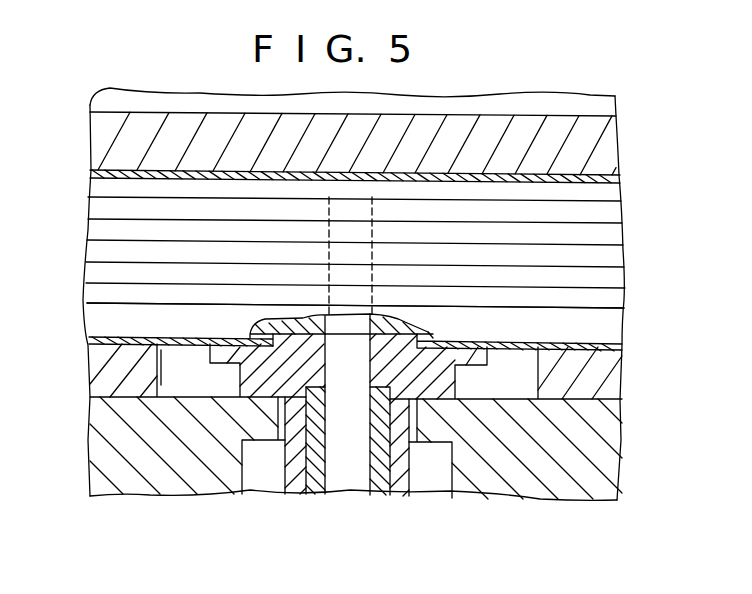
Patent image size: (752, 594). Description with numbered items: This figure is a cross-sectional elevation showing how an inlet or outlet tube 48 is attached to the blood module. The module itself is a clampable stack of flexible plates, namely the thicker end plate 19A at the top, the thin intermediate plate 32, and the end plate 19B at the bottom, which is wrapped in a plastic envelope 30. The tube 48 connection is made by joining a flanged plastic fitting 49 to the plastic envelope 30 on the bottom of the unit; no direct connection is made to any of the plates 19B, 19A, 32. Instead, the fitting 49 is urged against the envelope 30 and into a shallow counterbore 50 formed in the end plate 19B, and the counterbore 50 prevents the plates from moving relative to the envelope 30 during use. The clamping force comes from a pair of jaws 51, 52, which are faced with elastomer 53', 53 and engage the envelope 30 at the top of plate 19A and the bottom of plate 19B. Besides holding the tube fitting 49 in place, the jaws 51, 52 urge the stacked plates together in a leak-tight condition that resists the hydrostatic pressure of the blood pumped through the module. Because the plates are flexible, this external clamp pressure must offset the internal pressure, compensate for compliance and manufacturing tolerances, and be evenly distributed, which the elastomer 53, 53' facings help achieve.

The jaw 51 is at (602, 108).
The elastomer 53' is at (316, 143).
The plastic envelope 30 is at (603, 176).
The end plate 19A is at (611, 193).
The plate 32 is at (624, 315).
The end plate 19B is at (629, 315).
The elastomer 53 is at (385, 371).
The jaw 52 is at (605, 437).
The counterbore 50 is at (432, 337).
The flanged plastic fitting 49 is at (251, 387).
The tube 48 is at (382, 482).